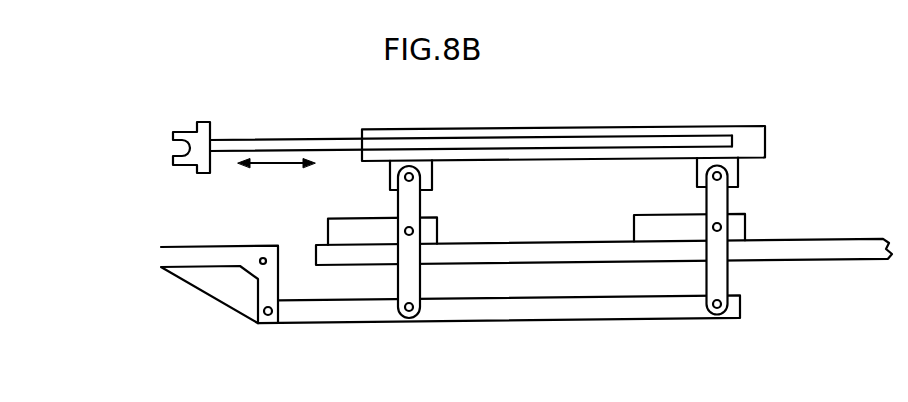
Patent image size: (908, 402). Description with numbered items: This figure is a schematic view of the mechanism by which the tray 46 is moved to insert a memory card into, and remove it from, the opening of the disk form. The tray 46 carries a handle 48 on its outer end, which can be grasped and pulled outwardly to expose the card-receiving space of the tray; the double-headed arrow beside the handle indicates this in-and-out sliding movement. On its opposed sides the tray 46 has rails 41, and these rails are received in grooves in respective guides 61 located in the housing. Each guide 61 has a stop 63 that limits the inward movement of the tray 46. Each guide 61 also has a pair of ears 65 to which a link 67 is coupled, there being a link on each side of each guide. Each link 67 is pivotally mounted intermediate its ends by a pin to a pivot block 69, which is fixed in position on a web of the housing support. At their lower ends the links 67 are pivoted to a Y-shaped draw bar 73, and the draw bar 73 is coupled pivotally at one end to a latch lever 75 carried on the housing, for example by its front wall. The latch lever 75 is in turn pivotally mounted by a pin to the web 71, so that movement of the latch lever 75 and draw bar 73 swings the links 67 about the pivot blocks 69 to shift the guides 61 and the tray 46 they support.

The rails 41 is at (333, 138).
The tray 46 is at (292, 131).
The handle 48 is at (173, 148).
The guides 61 is at (600, 131).
The stops 63 is at (752, 140).
The ears 65 is at (428, 177).
The link 67 is at (416, 278).
The pivot block 69 is at (378, 223).
The web 71 is at (264, 258).
The draw bar 73 is at (534, 307).
The latch lever 75 is at (200, 267).